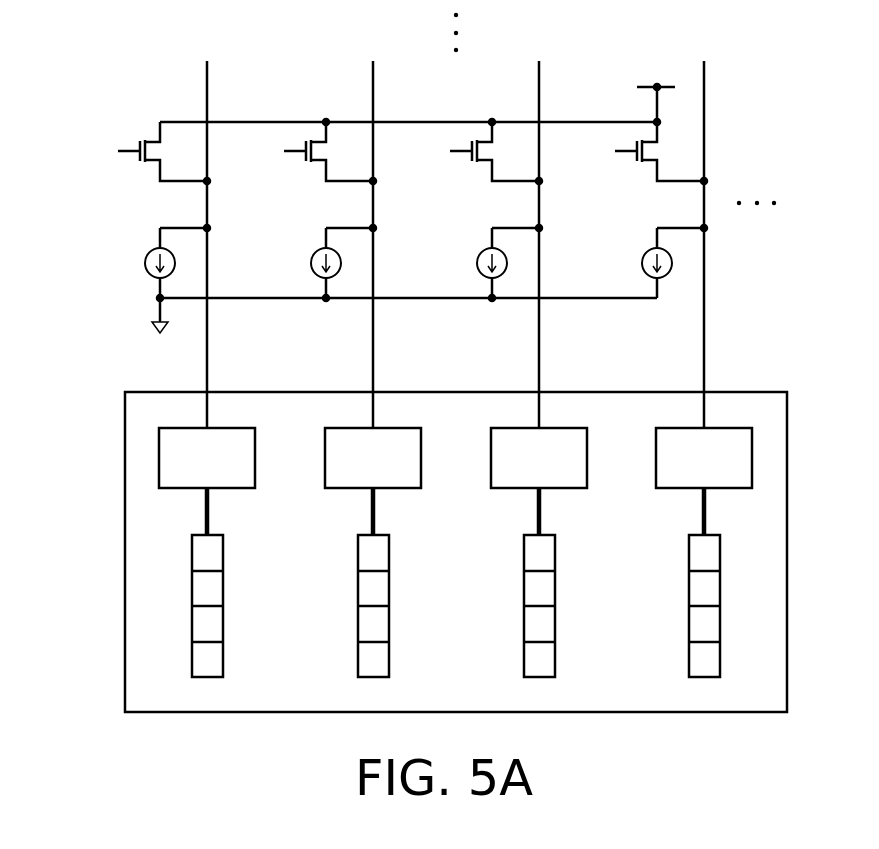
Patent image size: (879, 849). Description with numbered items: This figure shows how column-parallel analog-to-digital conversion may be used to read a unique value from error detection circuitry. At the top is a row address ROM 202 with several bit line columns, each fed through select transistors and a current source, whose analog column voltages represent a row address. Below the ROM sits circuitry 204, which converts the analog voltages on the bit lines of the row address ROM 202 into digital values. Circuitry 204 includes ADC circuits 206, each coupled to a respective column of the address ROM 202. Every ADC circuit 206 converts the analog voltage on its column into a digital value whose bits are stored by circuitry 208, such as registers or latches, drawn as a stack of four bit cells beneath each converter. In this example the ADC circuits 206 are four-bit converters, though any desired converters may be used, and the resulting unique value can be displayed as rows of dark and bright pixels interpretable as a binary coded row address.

The row address ROM 202 is at (183, 41).
The circuitry 204 is at (137, 430).
The ADC circuit 206 is at (223, 480).
The circuitry 208 is at (356, 582).